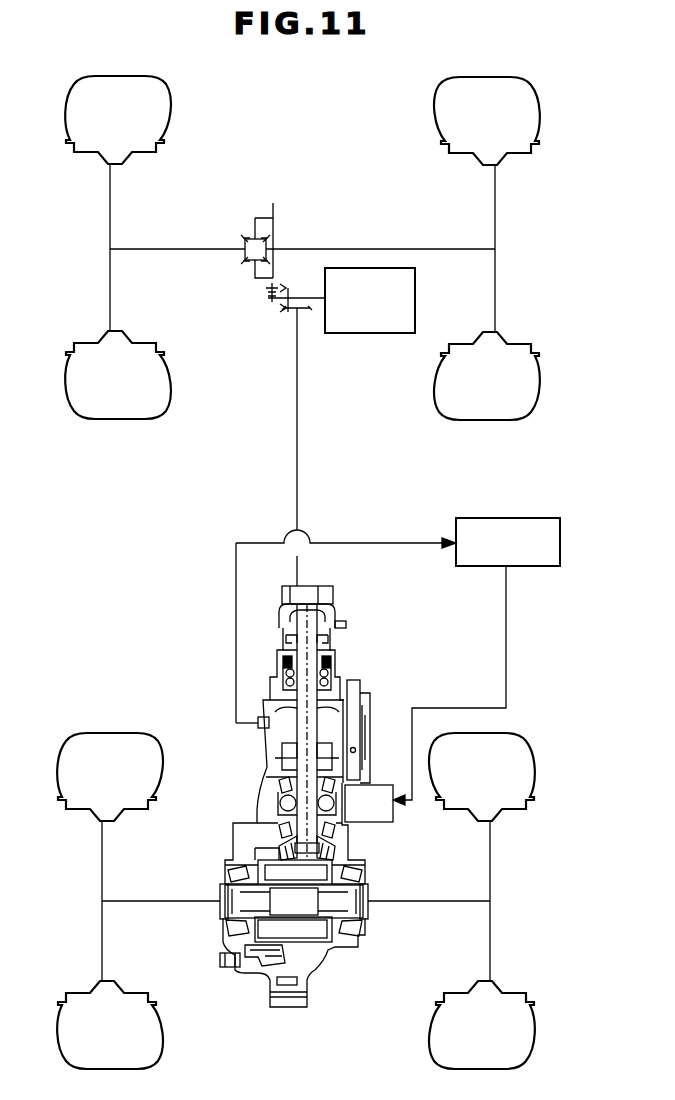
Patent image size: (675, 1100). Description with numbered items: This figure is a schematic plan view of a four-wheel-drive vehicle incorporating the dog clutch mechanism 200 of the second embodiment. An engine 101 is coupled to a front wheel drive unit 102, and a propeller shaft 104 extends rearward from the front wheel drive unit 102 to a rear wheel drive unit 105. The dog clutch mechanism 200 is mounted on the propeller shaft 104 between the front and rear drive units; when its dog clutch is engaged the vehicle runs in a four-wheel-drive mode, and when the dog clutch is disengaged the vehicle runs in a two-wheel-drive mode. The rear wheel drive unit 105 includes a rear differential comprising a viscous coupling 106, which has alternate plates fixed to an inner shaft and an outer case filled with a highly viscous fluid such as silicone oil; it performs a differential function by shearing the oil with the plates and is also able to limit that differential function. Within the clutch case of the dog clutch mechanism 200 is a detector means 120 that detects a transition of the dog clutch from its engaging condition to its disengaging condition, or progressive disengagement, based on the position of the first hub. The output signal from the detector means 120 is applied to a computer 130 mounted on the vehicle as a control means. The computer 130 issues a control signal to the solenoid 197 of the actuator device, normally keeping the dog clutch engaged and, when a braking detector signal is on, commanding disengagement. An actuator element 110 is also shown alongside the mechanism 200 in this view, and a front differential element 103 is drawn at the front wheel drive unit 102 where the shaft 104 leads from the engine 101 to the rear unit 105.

The engine 101 is at (372, 336).
The front wheel drive unit 102 is at (307, 228).
The front differential 103 is at (250, 234).
The propeller shaft 104 is at (297, 465).
The rear wheel drive unit 105 is at (250, 993).
The viscous coupling 106 is at (313, 928).
The actuator 110 is at (382, 720).
The detector means 120 is at (259, 716).
The computer 130 is at (515, 517).
The solenoid unit 197 is at (372, 823).
The dog clutch mechanism 200 is at (271, 810).